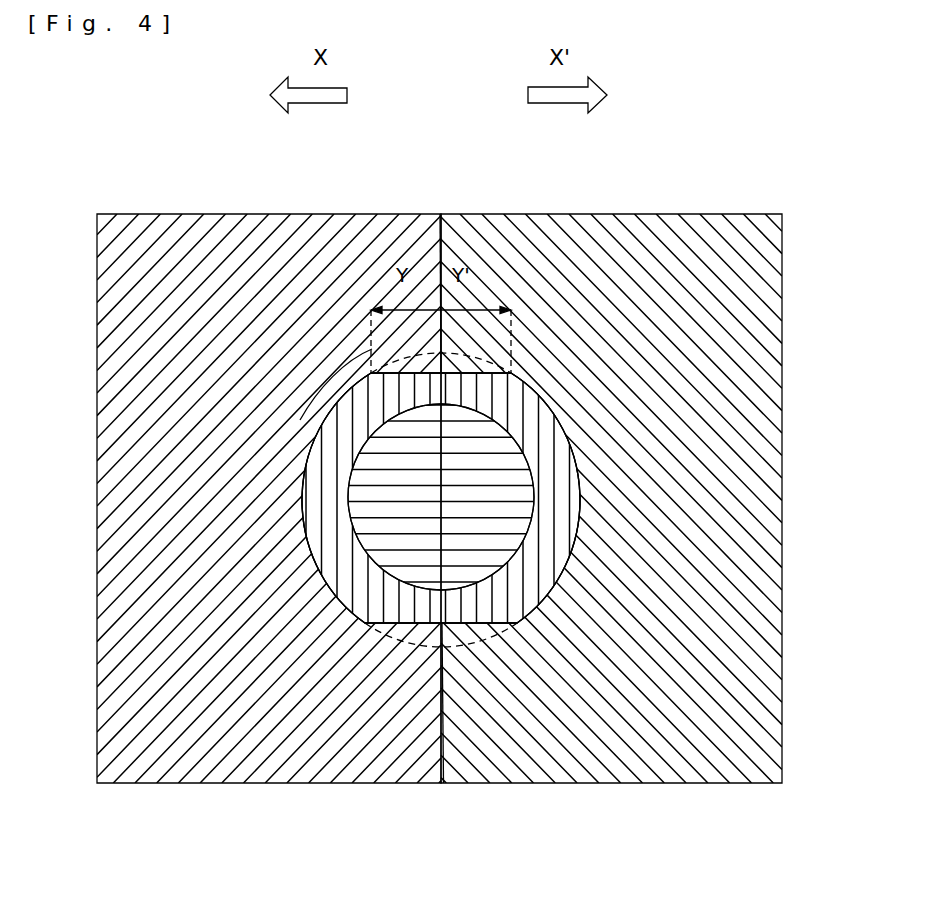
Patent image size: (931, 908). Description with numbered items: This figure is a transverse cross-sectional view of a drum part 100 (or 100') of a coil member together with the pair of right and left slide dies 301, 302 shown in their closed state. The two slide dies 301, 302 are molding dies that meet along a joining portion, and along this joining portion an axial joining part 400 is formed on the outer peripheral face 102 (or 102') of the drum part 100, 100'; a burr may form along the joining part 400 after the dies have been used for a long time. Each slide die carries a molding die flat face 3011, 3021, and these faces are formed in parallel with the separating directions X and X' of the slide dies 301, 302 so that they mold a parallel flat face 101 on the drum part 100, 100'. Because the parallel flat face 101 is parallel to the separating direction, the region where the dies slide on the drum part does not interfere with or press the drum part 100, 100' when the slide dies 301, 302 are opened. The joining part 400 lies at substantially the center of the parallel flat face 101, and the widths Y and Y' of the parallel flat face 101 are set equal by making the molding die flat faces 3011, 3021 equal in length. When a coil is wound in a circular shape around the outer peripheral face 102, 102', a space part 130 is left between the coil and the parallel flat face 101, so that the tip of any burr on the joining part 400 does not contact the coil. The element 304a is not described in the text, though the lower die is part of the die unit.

The slide die 301 is at (310, 230).
The slide die 302 is at (648, 230).
The joining part 400 is at (472, 355).
The space part 130 is at (480, 350).
The molding die flat face 3011 is at (372, 410).
The molding die flat face 3021 is at (520, 402).
The parallel flat face 101 is at (362, 351).
The outer peripheral face 102 is at (443, 497).
The outer peripheral face 102' is at (446, 497).
The drum part 100 is at (441, 620).
The drum part 100' is at (441, 630).
The inner filling portion 304a is at (486, 437).